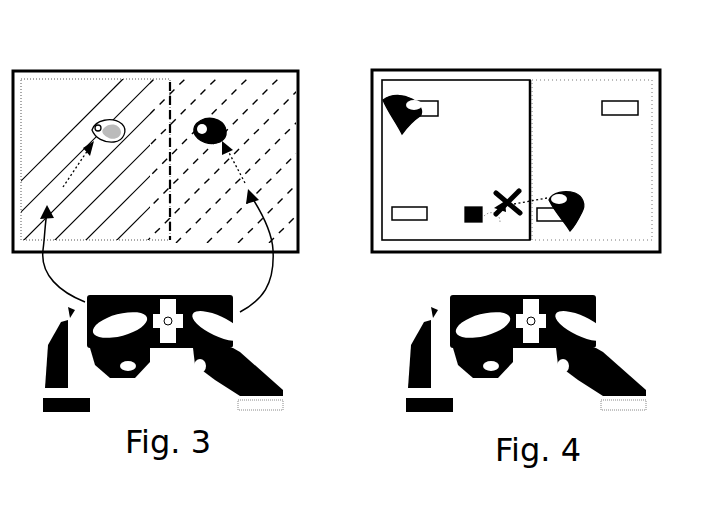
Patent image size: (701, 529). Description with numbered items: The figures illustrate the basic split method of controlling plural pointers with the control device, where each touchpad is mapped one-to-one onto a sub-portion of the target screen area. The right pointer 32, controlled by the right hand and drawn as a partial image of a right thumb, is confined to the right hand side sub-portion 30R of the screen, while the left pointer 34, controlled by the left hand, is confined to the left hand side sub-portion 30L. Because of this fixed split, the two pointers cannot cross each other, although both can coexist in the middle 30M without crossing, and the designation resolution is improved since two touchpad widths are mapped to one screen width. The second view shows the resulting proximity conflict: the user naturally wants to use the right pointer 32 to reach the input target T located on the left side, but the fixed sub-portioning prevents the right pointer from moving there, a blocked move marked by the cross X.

In FIG. 3, the left hand side sub-portion 30L is at (88, 80).
In FIG. 3, the middle 30M is at (163, 90).
In FIG. 3, the right hand side sub-portion 30R is at (228, 92).
In FIG. 3, the left pointer 34 is at (82, 202).
In FIG. 4, the left pointer 34 is at (408, 119).
In FIG. 3, the right pointer 32 is at (239, 208).
In FIG. 4, the right pointer 32 is at (583, 207).
In FIG. 4, the input target T is at (467, 206).
In FIG. 4, the collision mark X is at (508, 202).